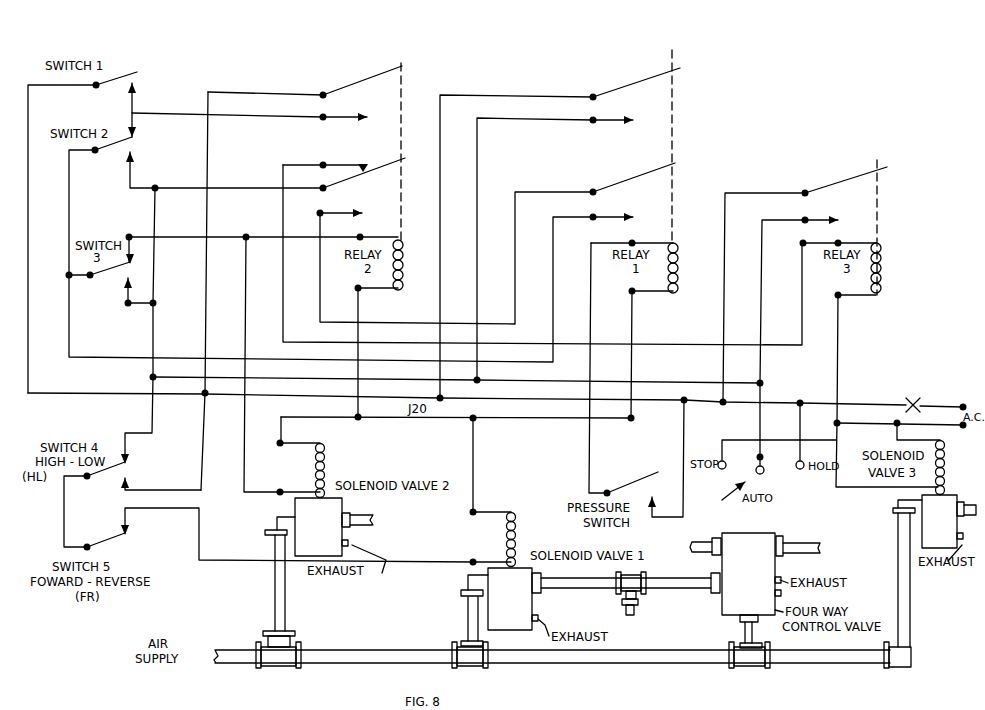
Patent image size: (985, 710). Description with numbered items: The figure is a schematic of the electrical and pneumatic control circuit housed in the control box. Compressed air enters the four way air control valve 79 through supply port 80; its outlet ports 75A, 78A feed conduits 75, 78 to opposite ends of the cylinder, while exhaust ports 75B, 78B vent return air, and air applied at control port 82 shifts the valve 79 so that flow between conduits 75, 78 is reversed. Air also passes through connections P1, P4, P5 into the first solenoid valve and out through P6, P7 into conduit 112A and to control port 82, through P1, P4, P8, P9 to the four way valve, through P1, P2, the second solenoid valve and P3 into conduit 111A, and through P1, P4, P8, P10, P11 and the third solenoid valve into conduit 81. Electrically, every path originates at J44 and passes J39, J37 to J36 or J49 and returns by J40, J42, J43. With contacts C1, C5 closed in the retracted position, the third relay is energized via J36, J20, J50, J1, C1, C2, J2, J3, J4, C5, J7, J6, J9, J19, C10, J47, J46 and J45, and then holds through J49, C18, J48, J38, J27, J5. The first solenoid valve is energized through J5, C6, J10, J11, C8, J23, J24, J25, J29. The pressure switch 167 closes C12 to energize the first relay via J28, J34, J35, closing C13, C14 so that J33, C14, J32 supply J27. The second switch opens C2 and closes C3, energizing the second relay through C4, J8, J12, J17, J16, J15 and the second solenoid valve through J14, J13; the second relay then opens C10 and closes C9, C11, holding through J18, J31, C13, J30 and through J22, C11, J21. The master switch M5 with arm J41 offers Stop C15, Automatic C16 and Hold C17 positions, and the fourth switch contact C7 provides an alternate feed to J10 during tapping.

The junction J1 is at (88, 80).
The junction J2 is at (91, 158).
The junction J3 is at (57, 271).
The junction J4 is at (87, 284).
The junction J5 is at (140, 378).
The junction J6 is at (161, 299).
The junction J7 is at (124, 312).
The junction J8 is at (125, 231).
The junction J9 is at (153, 182).
The junction J10 is at (87, 484).
The junction J11 is at (84, 541).
The junction J12 is at (241, 231).
The junction J13 is at (277, 452).
The junction J14 is at (277, 485).
The junction J15 is at (354, 425).
The junction J16 is at (369, 296).
The junction J17 is at (370, 231).
The junction J18 is at (307, 207).
The junction J19 is at (309, 182).
The junction J20 is at (309, 159).
The junction J21 is at (309, 111).
The junction J22 is at (309, 89).
The junction J23 is at (471, 556).
The junction J24 is at (471, 520).
The junction J25 is at (466, 412).
The junction J27 is at (469, 388).
The junction J28 is at (603, 486).
The junction J29 is at (626, 428).
The junction J30 is at (575, 211).
The junction J31 is at (576, 186).
The junction J32 is at (577, 114).
The junction J33 is at (578, 91).
The junction J34 is at (640, 236).
The junction J35 is at (643, 299).
The junction J36 is at (677, 394).
The junction J37 is at (714, 409).
The junction J38 is at (773, 383).
The junction J39 is at (793, 397).
The junction J40 is at (832, 431).
The contact arm J41 is at (771, 457).
The junction J42 is at (884, 417).
The junction J43 is at (957, 432).
The junction J44 is at (955, 399).
The junction J45 is at (848, 303).
The junction J46 is at (847, 237).
The junction J47 is at (788, 238).
The junction J48 is at (786, 215).
The junction J49 is at (791, 188).
The junction J50 is at (214, 402).
The contact C1 is at (142, 87).
The contact C2 is at (143, 136).
The contact C3 is at (141, 156).
The contact C4 is at (139, 261).
The contact C5 is at (137, 280).
The contact C6 is at (134, 460).
The contact C7 is at (134, 480).
The contact C8 is at (134, 532).
The contact C9 is at (368, 206).
The contact C10 is at (373, 159).
The contact C11 is at (376, 110).
The contact C12 is at (665, 499).
The contact C13 is at (642, 211).
The contact C14 is at (642, 114).
The Stop contact C15 is at (720, 472).
The Automatic contact C16 is at (760, 479).
The Hold contact C17 is at (802, 473).
The contact C18 is at (849, 215).
The master switch M5 is at (722, 495).
The pressure switch 167 is at (639, 477).
The air supply connection P1 is at (292, 665).
The air connection P2 is at (272, 526).
The air connection P3 is at (350, 542).
The air connection P4 is at (480, 668).
The air connection P5 is at (468, 585).
The air connection P6 is at (540, 596).
The air connection P7 is at (625, 592).
The air connection P8 is at (760, 682).
The air connection P9 is at (768, 634).
The air connection P10 is at (908, 662).
The air connection P11 is at (895, 508).
The conduit 111A is at (366, 517).
The conduit 112A is at (630, 612).
The four way air control valve 79 is at (760, 585).
The conduit 75 is at (700, 547).
The outlet port 75A is at (705, 538).
The exhaust port 75B is at (784, 578).
The conduit 78 is at (815, 545).
The outlet port 78A is at (780, 538).
The exhaust port 78B is at (784, 592).
The air supply port 80 is at (742, 620).
The conduit 81 is at (975, 500).
The control port 82 is at (716, 583).